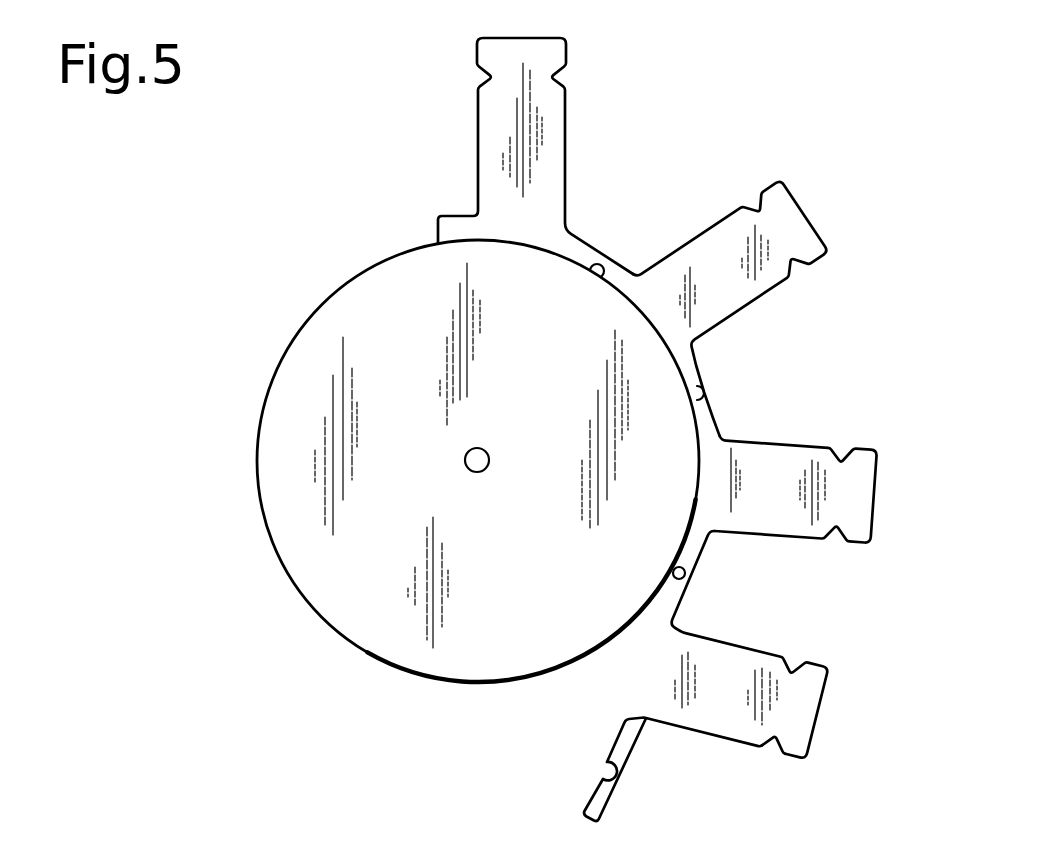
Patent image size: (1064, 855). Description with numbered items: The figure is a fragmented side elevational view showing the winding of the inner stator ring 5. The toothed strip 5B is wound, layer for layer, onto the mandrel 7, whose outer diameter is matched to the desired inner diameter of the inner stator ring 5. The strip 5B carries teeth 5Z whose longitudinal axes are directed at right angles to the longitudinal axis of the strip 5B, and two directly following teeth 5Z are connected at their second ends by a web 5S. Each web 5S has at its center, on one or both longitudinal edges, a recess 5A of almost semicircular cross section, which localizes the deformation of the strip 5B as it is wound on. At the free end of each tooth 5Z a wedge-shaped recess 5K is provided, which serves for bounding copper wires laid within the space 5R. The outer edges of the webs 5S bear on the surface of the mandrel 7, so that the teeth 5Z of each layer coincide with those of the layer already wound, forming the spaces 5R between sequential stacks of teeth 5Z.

The inner stator ring 5 is at (840, 213).
The recess 5A is at (602, 770).
The strip 5B is at (456, 112).
The wedge-shaped recess 5K is at (783, 755).
The space 5R is at (815, 592).
The web 5S is at (592, 257).
The tooth 5Z is at (810, 703).
The mandrel 7 is at (347, 297).